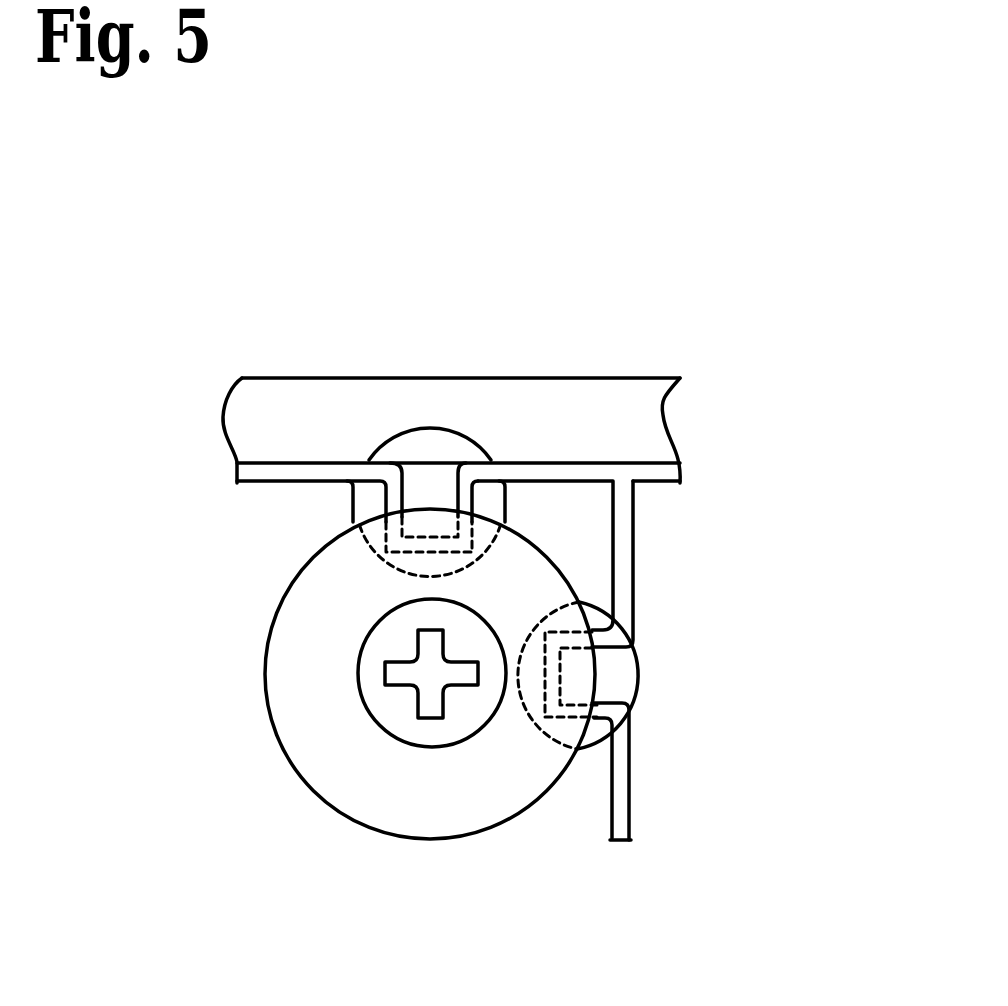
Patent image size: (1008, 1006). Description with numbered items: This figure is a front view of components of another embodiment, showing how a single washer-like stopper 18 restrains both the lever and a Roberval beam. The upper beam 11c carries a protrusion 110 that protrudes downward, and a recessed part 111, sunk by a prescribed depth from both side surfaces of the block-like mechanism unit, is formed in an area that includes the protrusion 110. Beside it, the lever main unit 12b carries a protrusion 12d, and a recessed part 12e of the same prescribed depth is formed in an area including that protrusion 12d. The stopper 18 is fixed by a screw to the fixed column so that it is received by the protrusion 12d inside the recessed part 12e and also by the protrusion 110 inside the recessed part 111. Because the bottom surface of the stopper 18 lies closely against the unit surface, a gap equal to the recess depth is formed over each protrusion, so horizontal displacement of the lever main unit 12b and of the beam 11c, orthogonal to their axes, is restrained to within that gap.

The upper beam 11c is at (580, 397).
The protrusion 110 is at (423, 480).
The recessed part 111 is at (437, 442).
The lever main unit 12b is at (662, 540).
The protrusion 12d is at (613, 682).
The recessed part 12e is at (640, 720).
The stopper 18 is at (455, 822).